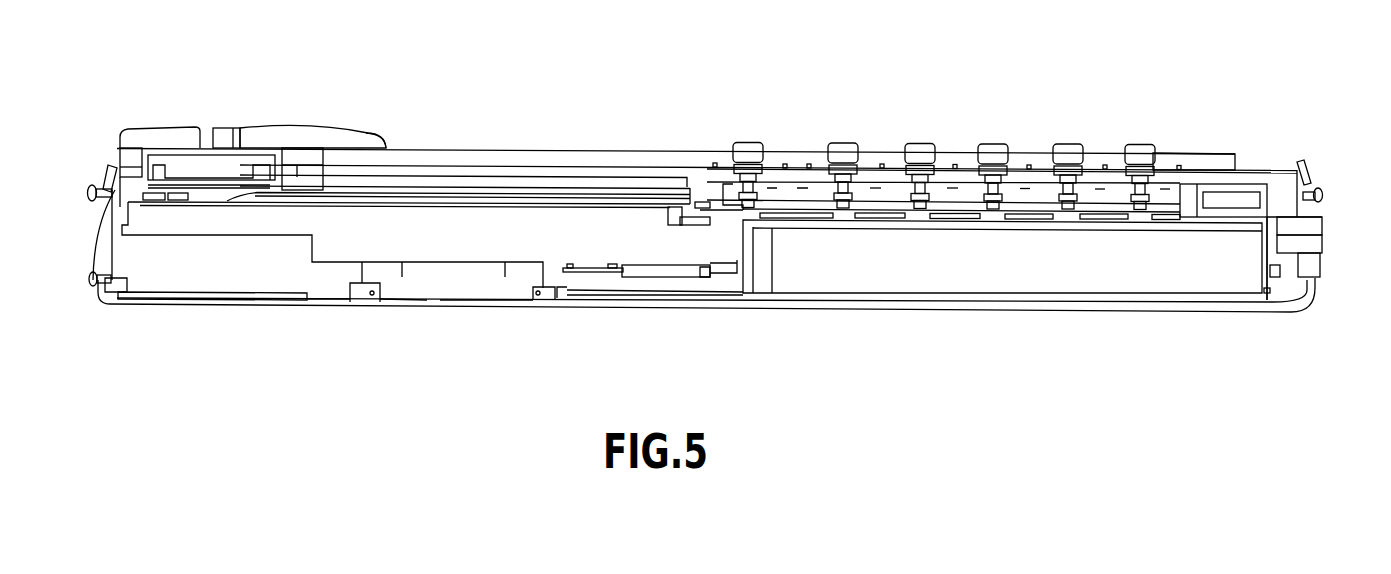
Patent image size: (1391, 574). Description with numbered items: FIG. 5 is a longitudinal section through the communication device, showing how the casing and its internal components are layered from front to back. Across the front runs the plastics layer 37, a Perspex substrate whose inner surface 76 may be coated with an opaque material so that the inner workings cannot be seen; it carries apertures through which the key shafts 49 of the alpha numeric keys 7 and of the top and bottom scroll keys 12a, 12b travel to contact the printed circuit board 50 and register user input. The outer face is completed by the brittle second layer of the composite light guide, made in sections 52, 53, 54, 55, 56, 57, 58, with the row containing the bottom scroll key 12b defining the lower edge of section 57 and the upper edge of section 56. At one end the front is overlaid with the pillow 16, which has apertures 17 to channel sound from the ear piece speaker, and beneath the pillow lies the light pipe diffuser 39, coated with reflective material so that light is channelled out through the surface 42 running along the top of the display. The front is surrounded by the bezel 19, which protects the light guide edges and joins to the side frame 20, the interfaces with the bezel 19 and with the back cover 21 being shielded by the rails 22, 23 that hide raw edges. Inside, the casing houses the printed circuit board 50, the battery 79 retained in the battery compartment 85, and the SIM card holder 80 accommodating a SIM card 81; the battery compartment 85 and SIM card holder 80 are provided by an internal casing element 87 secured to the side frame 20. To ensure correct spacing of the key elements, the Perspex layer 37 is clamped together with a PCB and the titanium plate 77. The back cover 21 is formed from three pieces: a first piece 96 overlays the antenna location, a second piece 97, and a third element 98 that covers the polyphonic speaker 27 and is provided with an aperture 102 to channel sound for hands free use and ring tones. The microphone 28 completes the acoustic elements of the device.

The alpha numeric keys 7 is at (917, 142).
The top scroll key 12a is at (745, 143).
The bottom scroll key 12b is at (842, 142).
The pillow 16 is at (328, 136).
The apertures 17 is at (233, 132).
The bezel 19 is at (113, 170).
The side frame 20 is at (100, 256).
The back cover 21 is at (928, 312).
The rail 22 is at (87, 192).
The rail 23 is at (93, 287).
The polyphonic speaker 27 is at (470, 288).
The microphone 28 is at (1230, 188).
The plastics layer 37 is at (477, 172).
The light pipe diffuser 39 is at (307, 172).
The surface 42 is at (370, 132).
The key shafts 49 is at (1160, 156).
The printed circuit board 50 is at (1105, 205).
The section of second layer 52 is at (1228, 158).
The section of second layer 53 is at (1103, 150).
The section of second layer 54 is at (1025, 150).
The section of second layer 55 is at (953, 148).
The section of second layer 56 is at (882, 148).
The section of second layer 57 is at (798, 148).
The section of second layer 58 is at (593, 158).
The inner surface 76 is at (1175, 215).
The titanium plate 77 is at (1235, 232).
The battery 79 is at (1138, 273).
The SIM card holder 80 is at (618, 272).
The SIM card 81 is at (662, 277).
The battery compartment 85 is at (1268, 296).
The internal casing element 87 is at (732, 273).
The first piece of back cover 96 is at (205, 308).
The second piece of back cover 97 is at (803, 303).
The third element of rear casing 98 is at (530, 307).
The aperture 102 is at (433, 305).